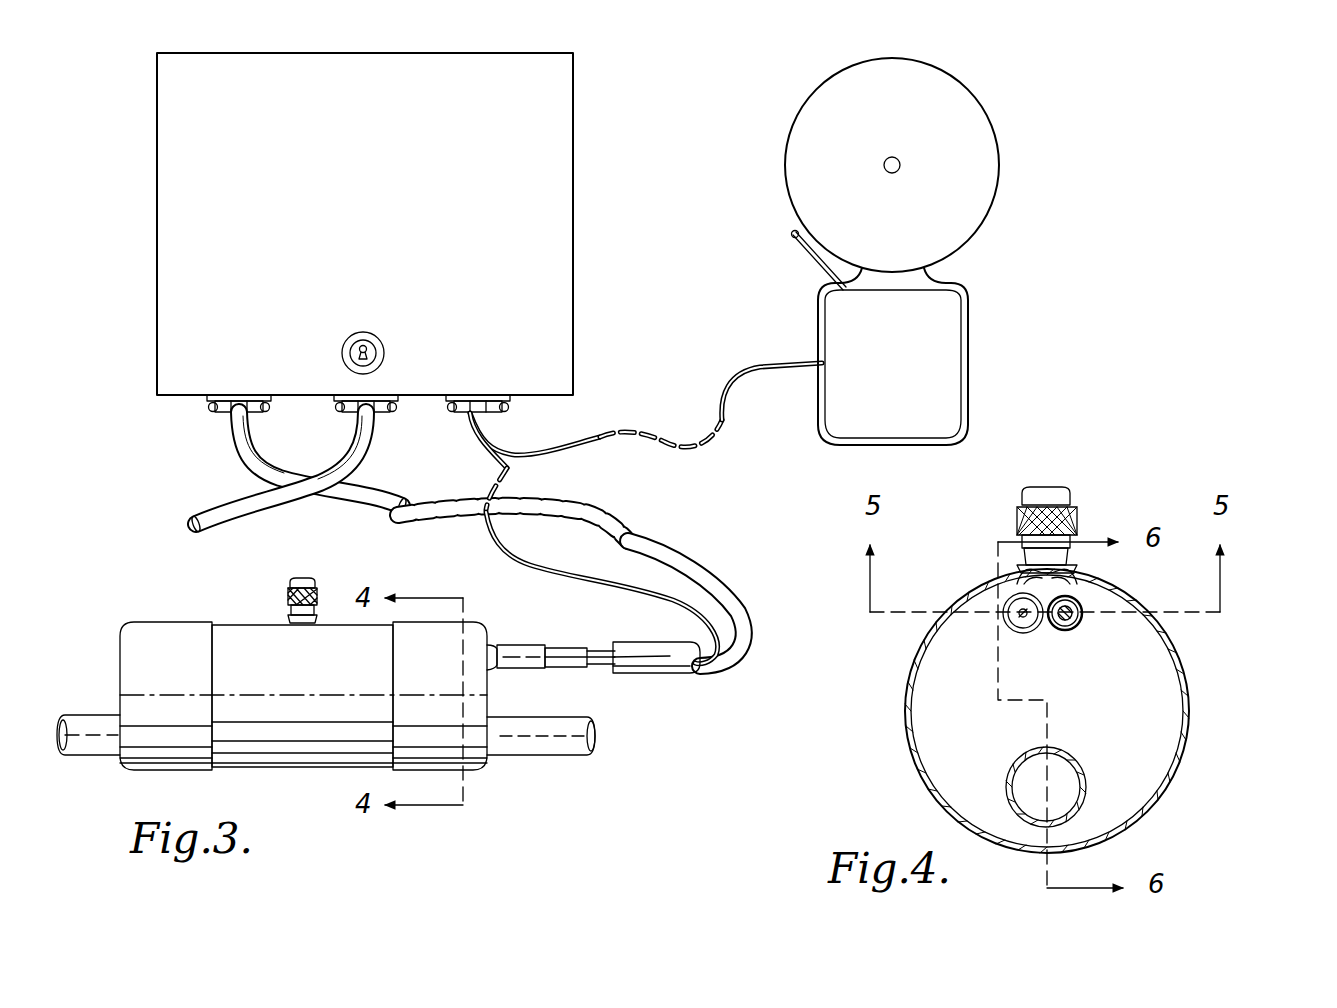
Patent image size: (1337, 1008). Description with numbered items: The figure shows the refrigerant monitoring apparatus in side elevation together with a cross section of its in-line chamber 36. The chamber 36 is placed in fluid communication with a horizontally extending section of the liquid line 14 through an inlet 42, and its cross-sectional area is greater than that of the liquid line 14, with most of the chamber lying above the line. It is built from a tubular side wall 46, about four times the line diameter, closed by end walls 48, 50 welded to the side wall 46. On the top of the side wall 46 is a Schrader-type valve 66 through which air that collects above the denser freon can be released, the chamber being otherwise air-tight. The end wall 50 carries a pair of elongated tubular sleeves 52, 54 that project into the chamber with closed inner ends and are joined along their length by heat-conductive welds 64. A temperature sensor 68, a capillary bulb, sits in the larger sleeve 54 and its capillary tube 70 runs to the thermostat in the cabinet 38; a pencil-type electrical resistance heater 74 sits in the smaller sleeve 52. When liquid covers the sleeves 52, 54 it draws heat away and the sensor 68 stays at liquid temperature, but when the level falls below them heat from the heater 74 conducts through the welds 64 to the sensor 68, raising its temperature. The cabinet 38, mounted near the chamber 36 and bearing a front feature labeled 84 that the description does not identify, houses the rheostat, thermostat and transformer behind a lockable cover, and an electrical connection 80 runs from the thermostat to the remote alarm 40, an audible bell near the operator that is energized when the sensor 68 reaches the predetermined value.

In FIG. 3, the liquid line 14 is at (82, 764).
In FIG. 4, the liquid line 14 is at (1002, 778).
In FIG. 3, the chamber 36 is at (378, 668).
In FIG. 4, the chamber 36 is at (1113, 663).
In FIG. 3, the cabinet 38 is at (590, 207).
In FIG. 3, the remote alarm 40 is at (1014, 188).
In FIG. 3, the inlet 42 is at (93, 727).
In FIG. 3, the tubular side wall 46 is at (250, 750).
In FIG. 3, the end wall 48 is at (133, 642).
In FIG. 4, the end wall 48 is at (1137, 745).
In FIG. 3, the end wall 50 is at (470, 638).
In FIG. 3, the sleeve 52 is at (565, 648).
In FIG. 4, the sleeve 52 is at (1070, 630).
In FIG. 3, the sleeve 54 is at (515, 648).
In FIG. 4, the sleeve 54 is at (1017, 633).
In FIG. 4, the welds 64 is at (1040, 578).
In FIG. 3, the valve 66 is at (327, 598).
In FIG. 4, the valve 66 is at (1013, 524).
In FIG. 4, the temperature sensor 68 is at (1007, 636).
In FIG. 3, the capillary tube 70 is at (668, 673).
In FIG. 3, the heater 74 is at (610, 640).
In FIG. 4, the heater 74 is at (1093, 638).
In FIG. 3, the electrical connection 80 is at (758, 364).
In FIG. 3, the lock 84 is at (389, 303).